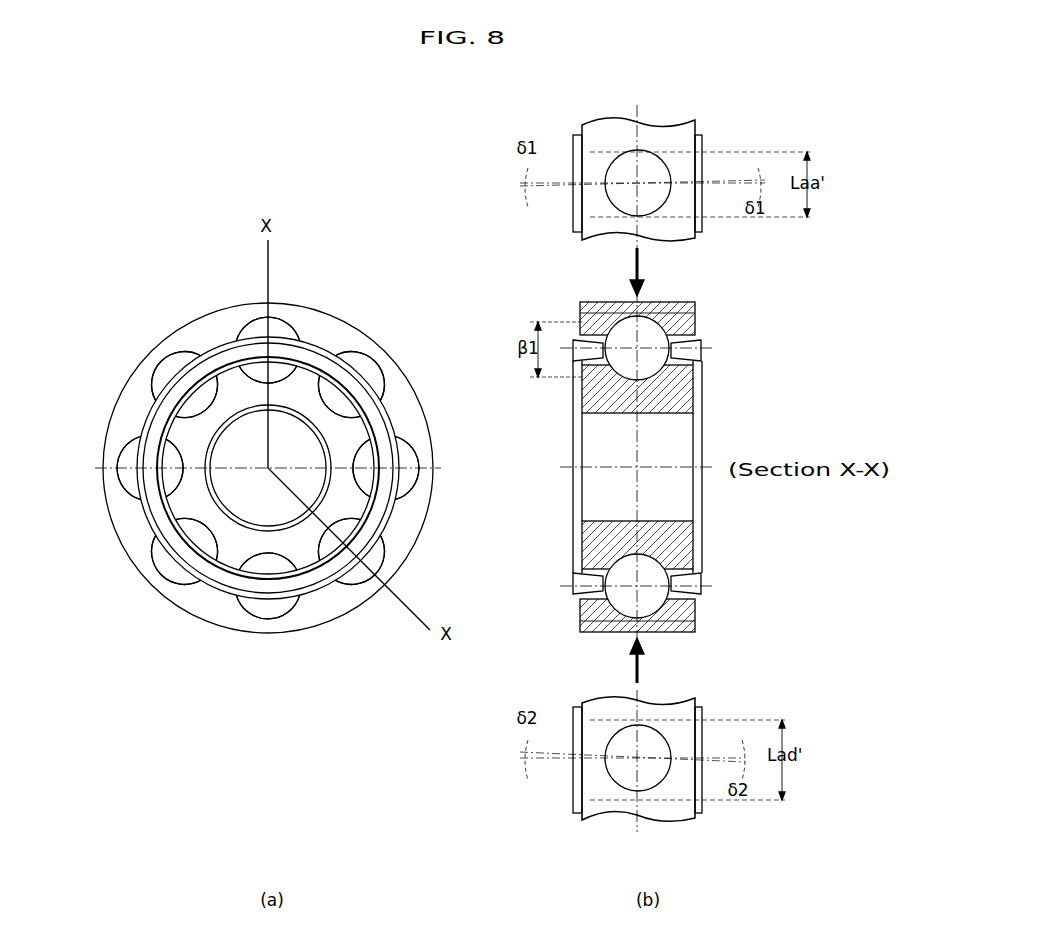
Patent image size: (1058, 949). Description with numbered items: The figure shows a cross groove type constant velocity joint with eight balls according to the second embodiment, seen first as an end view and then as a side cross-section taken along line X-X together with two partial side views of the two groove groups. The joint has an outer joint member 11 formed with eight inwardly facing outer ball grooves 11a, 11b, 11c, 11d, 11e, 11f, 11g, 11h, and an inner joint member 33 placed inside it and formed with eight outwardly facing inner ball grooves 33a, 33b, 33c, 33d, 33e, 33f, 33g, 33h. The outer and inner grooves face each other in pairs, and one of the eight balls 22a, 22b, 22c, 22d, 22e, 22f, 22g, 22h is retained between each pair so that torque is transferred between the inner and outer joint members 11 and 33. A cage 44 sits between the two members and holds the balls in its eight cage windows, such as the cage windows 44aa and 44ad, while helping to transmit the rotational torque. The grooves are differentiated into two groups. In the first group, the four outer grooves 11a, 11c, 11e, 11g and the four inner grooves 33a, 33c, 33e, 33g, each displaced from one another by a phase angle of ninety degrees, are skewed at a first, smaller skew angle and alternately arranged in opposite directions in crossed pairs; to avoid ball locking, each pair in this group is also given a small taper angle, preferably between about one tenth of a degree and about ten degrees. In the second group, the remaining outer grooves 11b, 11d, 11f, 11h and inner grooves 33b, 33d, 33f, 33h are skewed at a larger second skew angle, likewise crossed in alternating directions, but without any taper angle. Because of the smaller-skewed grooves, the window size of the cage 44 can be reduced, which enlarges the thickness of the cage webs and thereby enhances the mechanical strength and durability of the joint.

The outer joint member 11 is at (222, 334).
The outer ball groove 11a is at (290, 330).
The outer ball groove 11b is at (393, 388).
The outer ball groove 11c is at (420, 481).
The outer ball groove 11d is at (388, 558).
The outer ball groove 11e is at (292, 625).
The outer ball groove 11f is at (148, 560).
The outer ball groove 11g is at (118, 455).
The outer ball groove 11h is at (148, 371).
The ball 22a is at (300, 347).
The ball 22b is at (381, 378).
The ball 22c is at (410, 468).
The ball 22d is at (372, 598).
The ball 22e is at (273, 612).
The ball 22f is at (170, 576).
The ball 22g is at (125, 473).
The ball 22h is at (170, 378).
The inner joint member 33 is at (248, 364).
The inner ball groove 33a is at (302, 375).
The inner ball groove 33b is at (350, 372).
The inner ball groove 33c is at (386, 452).
The inner ball groove 33d is at (335, 600).
The inner ball groove 33e is at (246, 606).
The inner ball groove 33f is at (200, 556).
The inner ball groove 33g is at (160, 486).
The inner ball groove 33h is at (200, 386).
The cage 44 is at (208, 352).
The cage window 44aa is at (701, 232).
The cage window 44ad is at (701, 813).